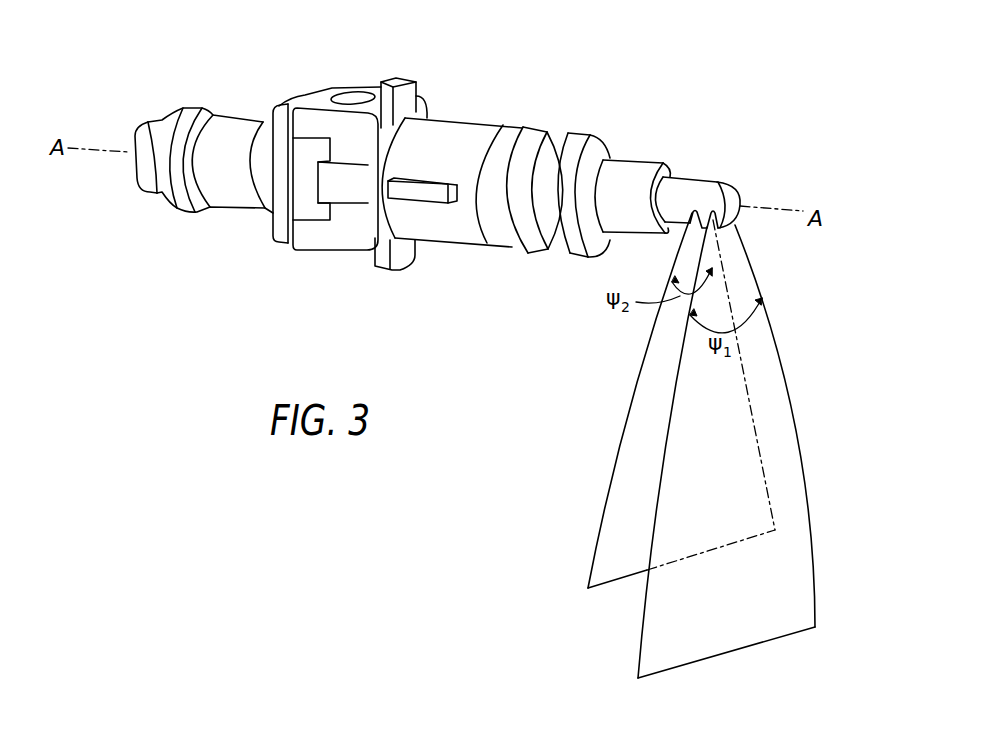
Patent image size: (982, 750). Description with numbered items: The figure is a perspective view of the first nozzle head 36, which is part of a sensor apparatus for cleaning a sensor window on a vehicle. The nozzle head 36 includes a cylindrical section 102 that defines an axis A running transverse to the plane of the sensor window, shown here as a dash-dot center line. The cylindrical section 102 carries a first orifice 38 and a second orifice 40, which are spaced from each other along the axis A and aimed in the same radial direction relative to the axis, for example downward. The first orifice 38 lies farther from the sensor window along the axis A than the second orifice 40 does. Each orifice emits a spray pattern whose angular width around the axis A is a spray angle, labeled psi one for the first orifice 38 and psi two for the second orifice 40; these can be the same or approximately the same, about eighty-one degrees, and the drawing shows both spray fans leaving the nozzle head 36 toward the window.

The first nozzle head 36 is at (529, 67).
The cylindrical section 102 is at (687, 193).
The first orifice 38 is at (735, 195).
The second orifice 40 is at (702, 212).